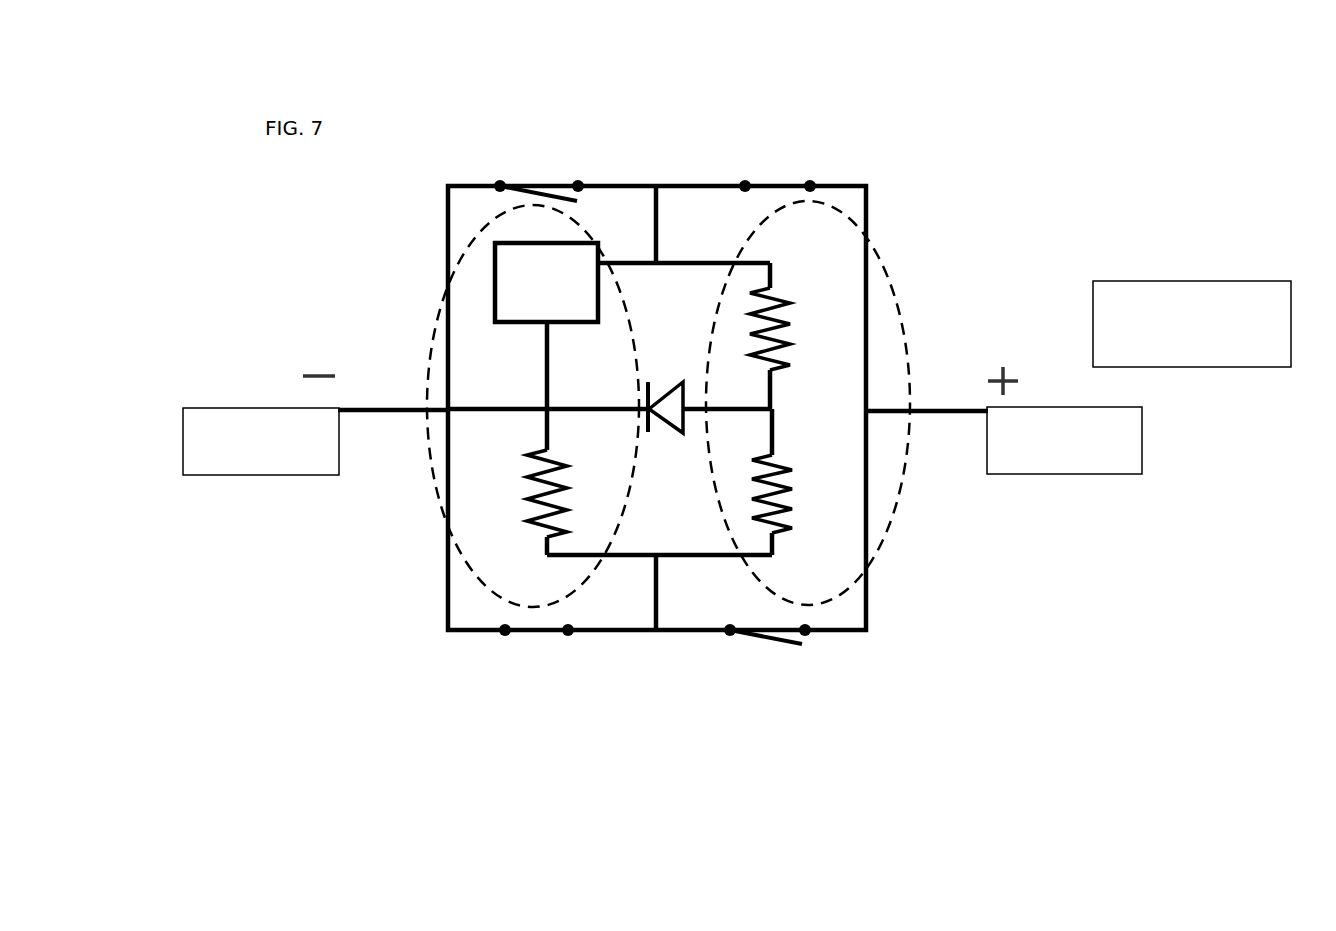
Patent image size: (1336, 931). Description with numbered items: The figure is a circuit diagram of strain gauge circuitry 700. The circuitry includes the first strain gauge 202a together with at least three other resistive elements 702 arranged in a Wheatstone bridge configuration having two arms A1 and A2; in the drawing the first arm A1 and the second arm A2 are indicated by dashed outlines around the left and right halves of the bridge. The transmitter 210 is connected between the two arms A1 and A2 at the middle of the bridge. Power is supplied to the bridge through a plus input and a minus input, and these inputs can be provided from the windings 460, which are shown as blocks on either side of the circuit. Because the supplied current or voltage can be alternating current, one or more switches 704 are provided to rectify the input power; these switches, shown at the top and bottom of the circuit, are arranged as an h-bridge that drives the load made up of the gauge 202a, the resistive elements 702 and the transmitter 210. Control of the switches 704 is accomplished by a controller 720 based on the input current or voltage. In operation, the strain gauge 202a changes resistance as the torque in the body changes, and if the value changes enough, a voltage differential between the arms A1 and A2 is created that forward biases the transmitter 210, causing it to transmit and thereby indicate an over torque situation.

The strain gauge circuitry 700 is at (1040, 174).
The resistive elements 702 is at (777, 337).
The switches 704 is at (545, 172).
The transmitter 210 is at (670, 380).
The first strain gauge 202a is at (523, 295).
The windings 460 is at (243, 452).
The controller 720 is at (1174, 337).
The first arm A1 is at (436, 322).
The second arm A2 is at (880, 260).